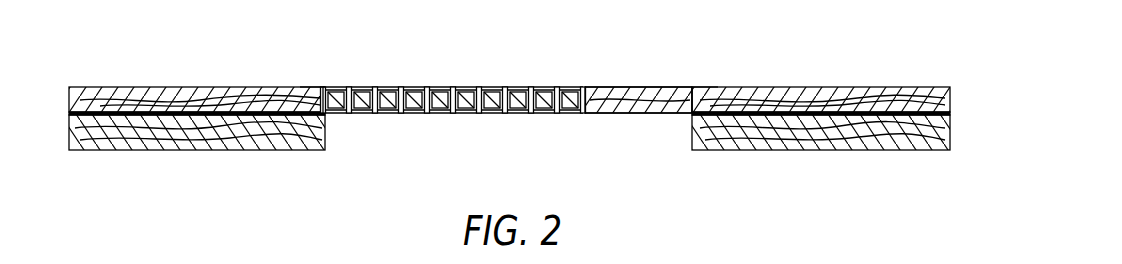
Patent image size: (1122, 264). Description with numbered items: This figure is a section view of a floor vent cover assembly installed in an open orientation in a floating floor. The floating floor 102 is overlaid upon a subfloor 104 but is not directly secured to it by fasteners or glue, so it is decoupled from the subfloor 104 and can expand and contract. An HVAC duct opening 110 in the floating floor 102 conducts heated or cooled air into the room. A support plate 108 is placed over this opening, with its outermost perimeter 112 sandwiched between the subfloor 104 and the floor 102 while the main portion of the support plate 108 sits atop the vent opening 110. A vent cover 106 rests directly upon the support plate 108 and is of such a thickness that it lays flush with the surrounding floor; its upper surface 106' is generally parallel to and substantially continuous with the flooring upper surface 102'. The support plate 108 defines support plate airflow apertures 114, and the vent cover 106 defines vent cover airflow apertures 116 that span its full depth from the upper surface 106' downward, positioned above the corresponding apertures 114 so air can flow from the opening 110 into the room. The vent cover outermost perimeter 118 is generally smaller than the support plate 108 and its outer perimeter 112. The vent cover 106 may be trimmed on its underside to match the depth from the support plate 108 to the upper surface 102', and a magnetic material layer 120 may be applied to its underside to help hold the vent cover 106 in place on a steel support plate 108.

The floating floor 102 is at (186, 80).
The flooring upper surface 102' is at (509, 66).
The subfloor 104 is at (108, 158).
The vent cover 106 is at (453, 47).
The upper surface of the vent cover 106' is at (622, 65).
The support plate 108 is at (439, 124).
The HVAC duct opening 110 is at (638, 124).
The outermost perimeter of the support plate 112 is at (325, 82).
The support plate airflow apertures 114 is at (504, 124).
The vent cover airflow apertures 116 is at (502, 80).
The vent cover outermost perimeter 118 is at (331, 80).
The magnetic material layer 120 is at (625, 86).